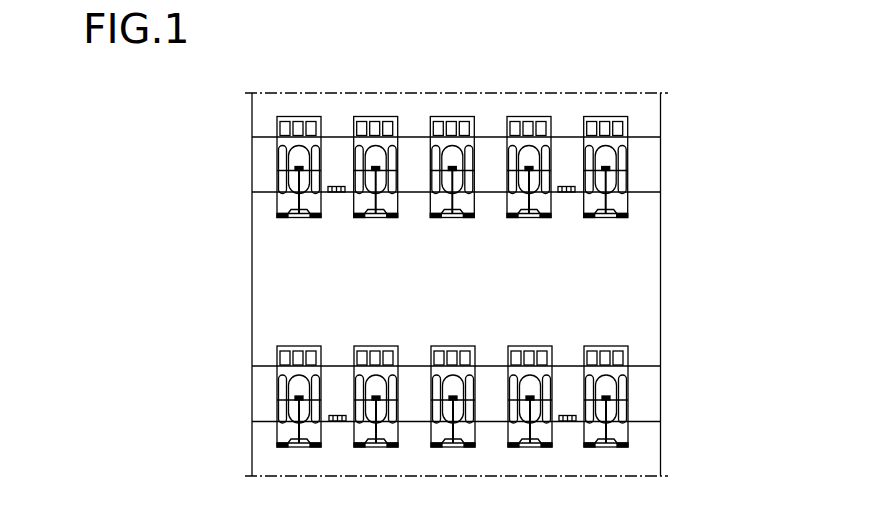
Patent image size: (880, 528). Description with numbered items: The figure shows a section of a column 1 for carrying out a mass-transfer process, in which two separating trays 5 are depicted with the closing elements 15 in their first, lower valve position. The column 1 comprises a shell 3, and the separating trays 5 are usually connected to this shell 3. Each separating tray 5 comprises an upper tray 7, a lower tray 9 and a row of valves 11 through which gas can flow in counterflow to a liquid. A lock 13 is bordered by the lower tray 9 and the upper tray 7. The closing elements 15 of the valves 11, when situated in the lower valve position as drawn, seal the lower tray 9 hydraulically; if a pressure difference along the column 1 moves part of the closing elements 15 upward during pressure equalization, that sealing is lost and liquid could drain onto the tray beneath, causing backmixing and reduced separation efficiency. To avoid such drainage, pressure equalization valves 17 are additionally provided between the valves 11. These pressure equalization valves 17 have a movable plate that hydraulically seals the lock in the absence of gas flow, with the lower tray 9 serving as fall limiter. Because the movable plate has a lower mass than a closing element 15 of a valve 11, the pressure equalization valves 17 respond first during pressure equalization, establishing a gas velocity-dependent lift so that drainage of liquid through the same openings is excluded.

The column 1 is at (681, 279).
The shell 3 is at (252, 290).
The separating trays 5 is at (445, 266).
The upper tray 7 is at (645, 134).
The lower tray 9 is at (645, 190).
The valves 11 is at (375, 117).
The lock 13 is at (647, 389).
The closing elements 15 is at (292, 197).
The pressure equalization valves 17 is at (566, 186).